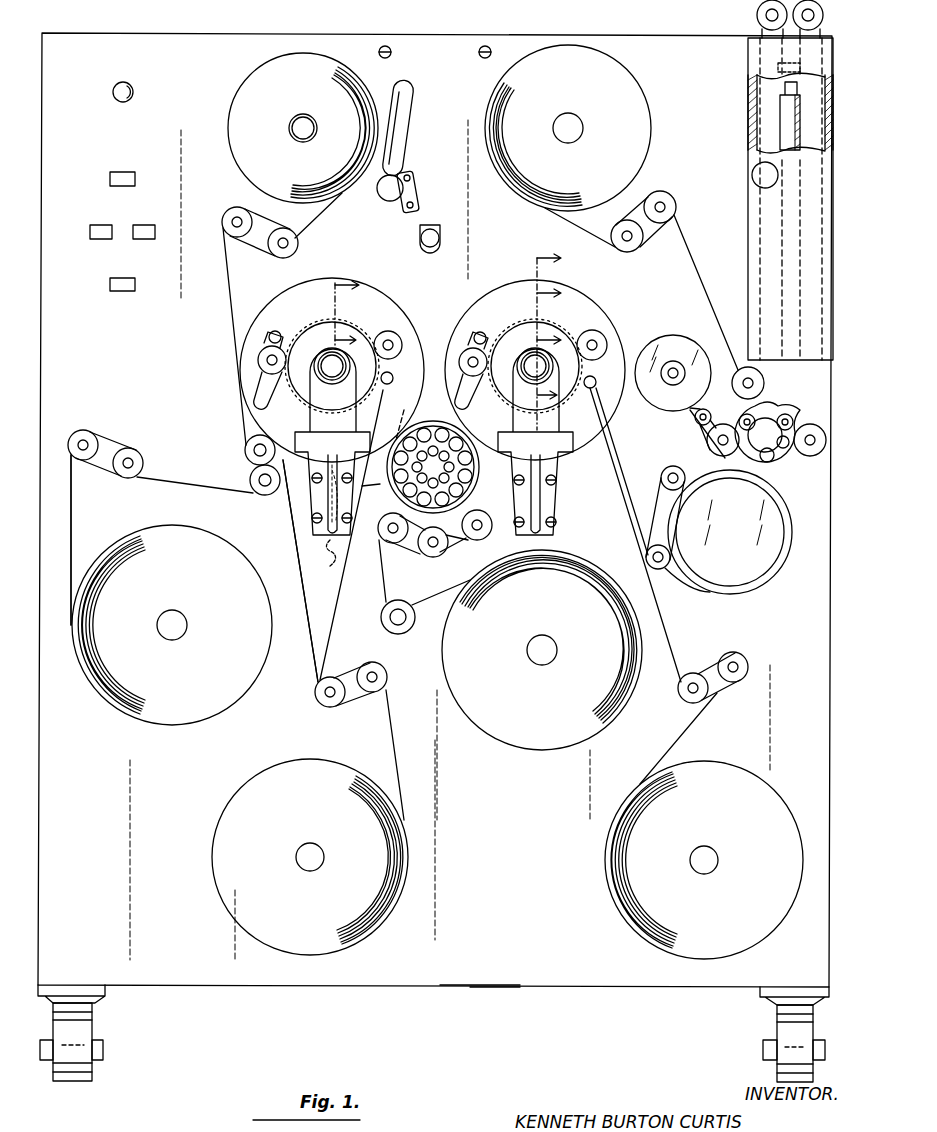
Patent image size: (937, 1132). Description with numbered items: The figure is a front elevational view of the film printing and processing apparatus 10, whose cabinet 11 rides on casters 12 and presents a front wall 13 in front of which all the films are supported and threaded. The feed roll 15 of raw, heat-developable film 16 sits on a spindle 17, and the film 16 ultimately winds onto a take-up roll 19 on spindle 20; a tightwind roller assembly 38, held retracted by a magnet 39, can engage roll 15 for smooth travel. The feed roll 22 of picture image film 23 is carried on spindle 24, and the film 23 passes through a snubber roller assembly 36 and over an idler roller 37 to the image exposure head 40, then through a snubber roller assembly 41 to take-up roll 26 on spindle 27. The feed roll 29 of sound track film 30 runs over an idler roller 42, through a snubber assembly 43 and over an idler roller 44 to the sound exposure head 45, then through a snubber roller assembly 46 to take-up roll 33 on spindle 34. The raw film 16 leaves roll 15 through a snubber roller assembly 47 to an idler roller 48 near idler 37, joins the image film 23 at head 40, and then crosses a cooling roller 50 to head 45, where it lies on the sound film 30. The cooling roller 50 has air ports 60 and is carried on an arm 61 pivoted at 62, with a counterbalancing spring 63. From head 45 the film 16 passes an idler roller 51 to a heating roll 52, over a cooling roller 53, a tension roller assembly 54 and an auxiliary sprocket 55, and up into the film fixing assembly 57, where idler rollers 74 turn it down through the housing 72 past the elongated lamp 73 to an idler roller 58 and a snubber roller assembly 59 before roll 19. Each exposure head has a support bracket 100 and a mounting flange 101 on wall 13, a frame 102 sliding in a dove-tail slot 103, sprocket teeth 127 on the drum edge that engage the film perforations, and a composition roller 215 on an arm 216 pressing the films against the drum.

The film printing and processing apparatus 10 is at (296, 986).
The cabinet 11 is at (492, 988).
The casters 12 is at (90, 1067).
The front wall 13 is at (480, 892).
The feed roll 15 is at (237, 85).
The film 16 is at (335, 197).
The spindle 17 is at (307, 114).
The take-up roll 19 is at (617, 60).
The spindle 20 is at (567, 115).
The feed roll 22 is at (184, 725).
The picture image film 23 is at (72, 508).
The spindle 24 is at (172, 640).
The take-up roll 26 is at (215, 900).
The spindle 27 is at (296, 857).
The feed roll 29 is at (528, 750).
The sound track film 30 is at (426, 628).
The take-up roll 33 is at (610, 900).
The spindle 34 is at (705, 847).
The snubber roller assembly 36 is at (92, 432).
The idler roller 37 is at (302, 502).
The tightwind roller assembly 38 is at (405, 150).
The magnet 39 is at (420, 188).
The exposure head 40 is at (358, 320).
The snubber roller assembly 41 is at (322, 704).
The idler roller 42 is at (400, 600).
The snubber assembly 43 is at (430, 556).
The idler roller 44 is at (478, 546).
The sound exposure head 45 is at (563, 320).
The snubber roller assembly 46 is at (737, 653).
The snubber roller assembly 47 is at (231, 208).
The idler roller 48 is at (246, 455).
The cooling roller 50 is at (392, 518).
The idler roller 51 is at (652, 545).
The heating roll 52 is at (780, 560).
The cooling roller 53 is at (673, 336).
The tension roller assembly 54 is at (697, 428).
The auxiliary sprocket 55 is at (778, 448).
The film fixing assembly 57 is at (748, 98).
The idler roller 58 is at (741, 366).
The snubber roller assembly 59 is at (662, 192).
The ports 60 is at (448, 428).
The arm 61 is at (411, 413).
The pivot 62 is at (377, 492).
The counterbalancing spring 63 is at (340, 560).
The housing 72 is at (762, 222).
The lamp 73 is at (783, 113).
The idler rollers 74 is at (757, 17).
The support bracket 100 is at (310, 525).
The mounting flange 101 is at (608, 330).
The frame 102 is at (568, 410).
The dove-tail slot 103 is at (576, 462).
The sprocket teeth 127 is at (302, 322).
The composition roller 215 is at (272, 357).
The arm 216 is at (262, 396).